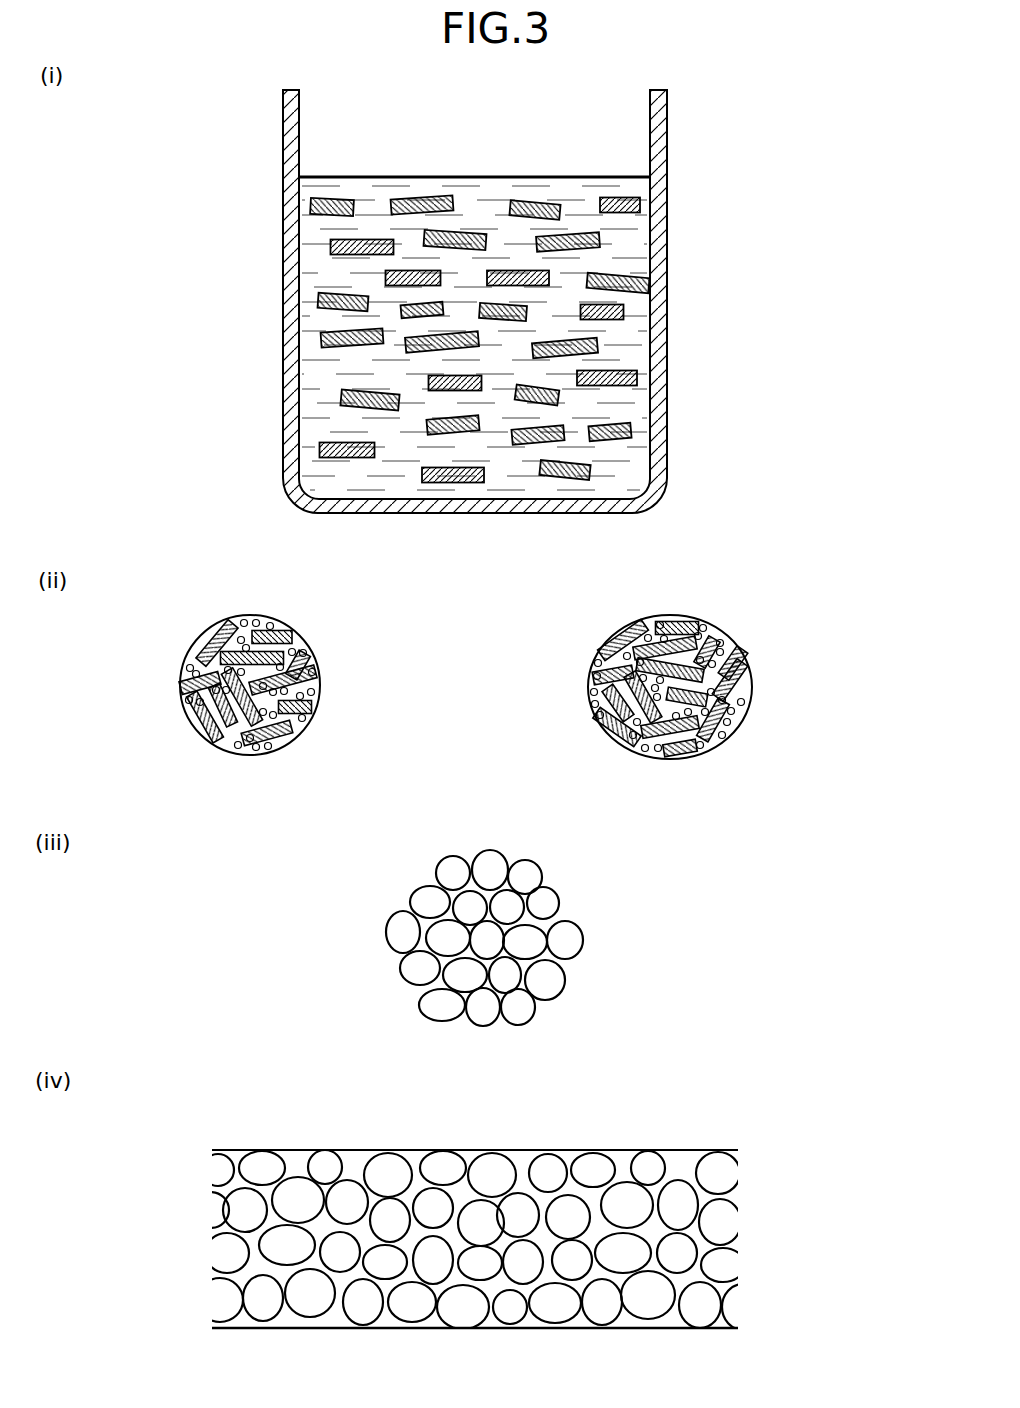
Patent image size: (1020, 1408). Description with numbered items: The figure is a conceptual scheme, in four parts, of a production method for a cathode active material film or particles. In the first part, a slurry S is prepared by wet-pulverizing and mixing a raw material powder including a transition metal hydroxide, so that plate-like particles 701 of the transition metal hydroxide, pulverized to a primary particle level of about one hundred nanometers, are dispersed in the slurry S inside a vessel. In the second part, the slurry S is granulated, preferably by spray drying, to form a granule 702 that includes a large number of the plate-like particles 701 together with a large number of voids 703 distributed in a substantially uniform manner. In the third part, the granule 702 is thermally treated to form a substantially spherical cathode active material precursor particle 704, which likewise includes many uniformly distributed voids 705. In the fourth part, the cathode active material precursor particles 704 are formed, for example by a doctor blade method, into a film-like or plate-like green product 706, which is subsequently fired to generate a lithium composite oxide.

The slurry S is at (549, 172).
The plate-like particles 701 is at (427, 198).
The granule 702 is at (345, 647).
The voids 703 is at (185, 706).
The cathode active material precursor particle 704 is at (565, 875).
The voids 705 is at (527, 916).
The green product 706 is at (680, 1148).